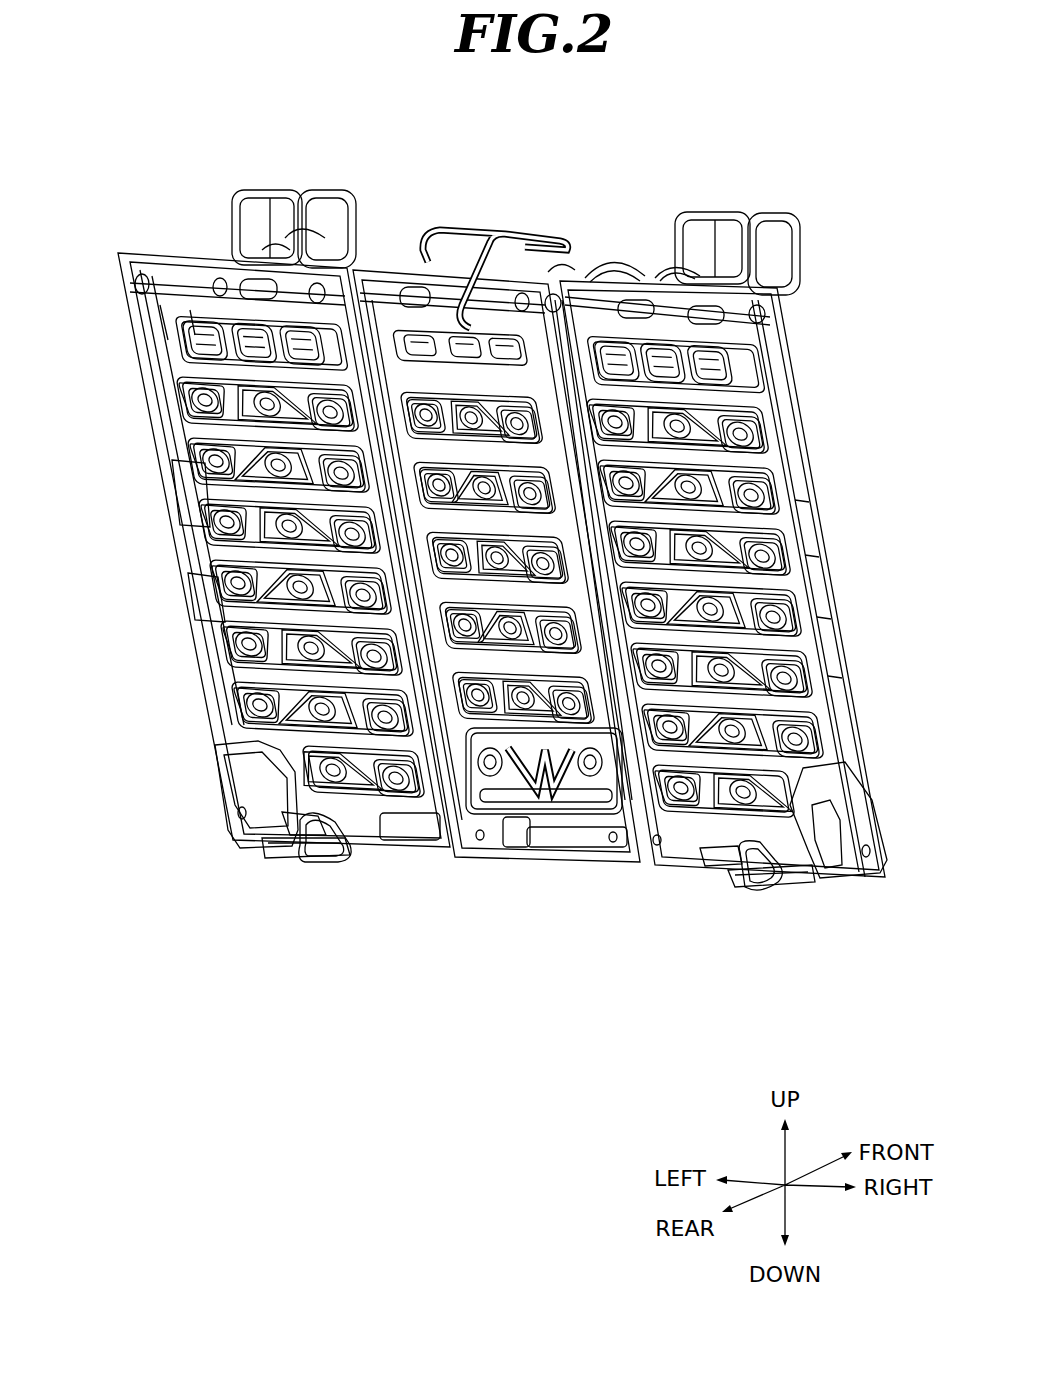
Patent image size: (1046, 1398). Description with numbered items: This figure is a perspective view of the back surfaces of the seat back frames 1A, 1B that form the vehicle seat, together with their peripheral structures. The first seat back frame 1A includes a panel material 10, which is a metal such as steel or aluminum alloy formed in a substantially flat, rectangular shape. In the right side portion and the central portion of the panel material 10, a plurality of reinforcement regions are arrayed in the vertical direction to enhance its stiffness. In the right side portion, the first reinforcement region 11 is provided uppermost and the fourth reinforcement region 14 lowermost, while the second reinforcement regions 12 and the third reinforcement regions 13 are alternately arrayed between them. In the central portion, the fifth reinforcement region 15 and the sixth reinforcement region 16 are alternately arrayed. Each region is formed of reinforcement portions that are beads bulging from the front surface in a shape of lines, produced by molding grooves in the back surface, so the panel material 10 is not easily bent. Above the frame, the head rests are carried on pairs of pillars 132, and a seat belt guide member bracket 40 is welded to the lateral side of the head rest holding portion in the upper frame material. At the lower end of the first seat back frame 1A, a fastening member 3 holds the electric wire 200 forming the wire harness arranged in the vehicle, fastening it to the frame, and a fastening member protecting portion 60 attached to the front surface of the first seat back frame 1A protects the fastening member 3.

The first seat back frame 1A is at (572, 266).
The seat back frame 1B is at (152, 500).
The fastening member 3 is at (308, 857).
The panel material 10 is at (502, 843).
The first reinforcement region 11 is at (755, 372).
The second reinforcement region 12 is at (770, 430).
The third reinforcement region 13 is at (780, 490).
The fourth reinforcement region 14 is at (712, 805).
The fifth reinforcement region 15 is at (185, 382).
The sixth reinforcement region 16 is at (192, 445).
The seat belt guide member bracket 40 is at (620, 265).
The fastening member protecting portion 60 is at (282, 858).
The pillar 132 is at (340, 205).
The electric wire 200 is at (343, 860).